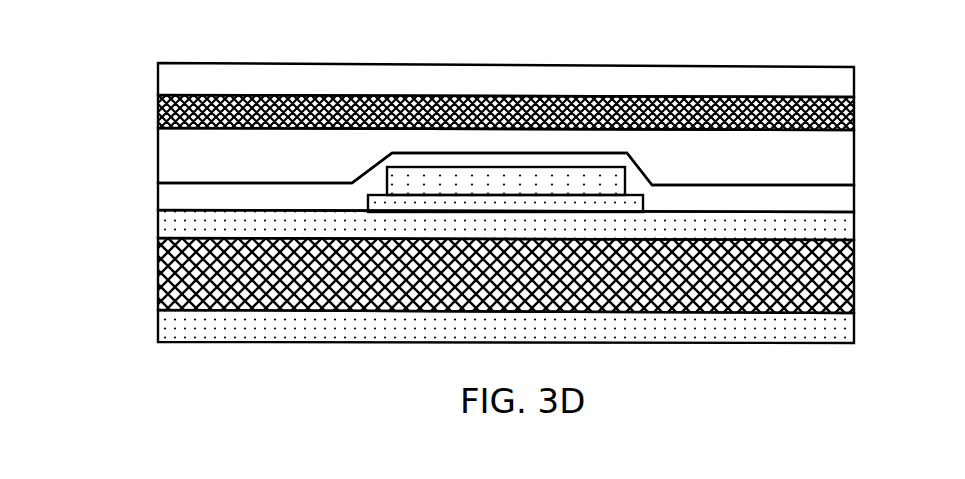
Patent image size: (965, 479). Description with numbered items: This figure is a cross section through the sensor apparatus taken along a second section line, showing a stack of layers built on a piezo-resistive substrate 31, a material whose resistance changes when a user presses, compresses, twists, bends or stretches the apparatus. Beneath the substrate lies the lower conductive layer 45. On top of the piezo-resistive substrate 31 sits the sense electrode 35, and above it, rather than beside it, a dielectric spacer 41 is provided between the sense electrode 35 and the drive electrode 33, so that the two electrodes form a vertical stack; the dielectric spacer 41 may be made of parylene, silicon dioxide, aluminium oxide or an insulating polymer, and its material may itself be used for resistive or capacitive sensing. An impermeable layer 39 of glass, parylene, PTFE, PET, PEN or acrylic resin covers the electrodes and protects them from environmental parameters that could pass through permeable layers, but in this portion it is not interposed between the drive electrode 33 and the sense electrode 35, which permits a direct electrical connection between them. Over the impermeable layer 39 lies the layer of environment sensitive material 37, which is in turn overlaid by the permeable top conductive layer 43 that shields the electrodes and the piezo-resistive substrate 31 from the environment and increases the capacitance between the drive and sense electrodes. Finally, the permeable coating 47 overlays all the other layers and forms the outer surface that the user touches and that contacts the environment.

The permeable coating 47 is at (842, 83).
The top conductive layer 43 is at (852, 108).
The layer of environment sensitive material 37 is at (840, 172).
The impermeable layer 39 is at (840, 202).
The drive electrode 33 is at (463, 180).
The dielectric spacer 41 is at (463, 202).
The sense electrode 35 is at (840, 228).
The piezo-resistive substrate 31 is at (840, 283).
The lower conductive layer 45 is at (840, 328).